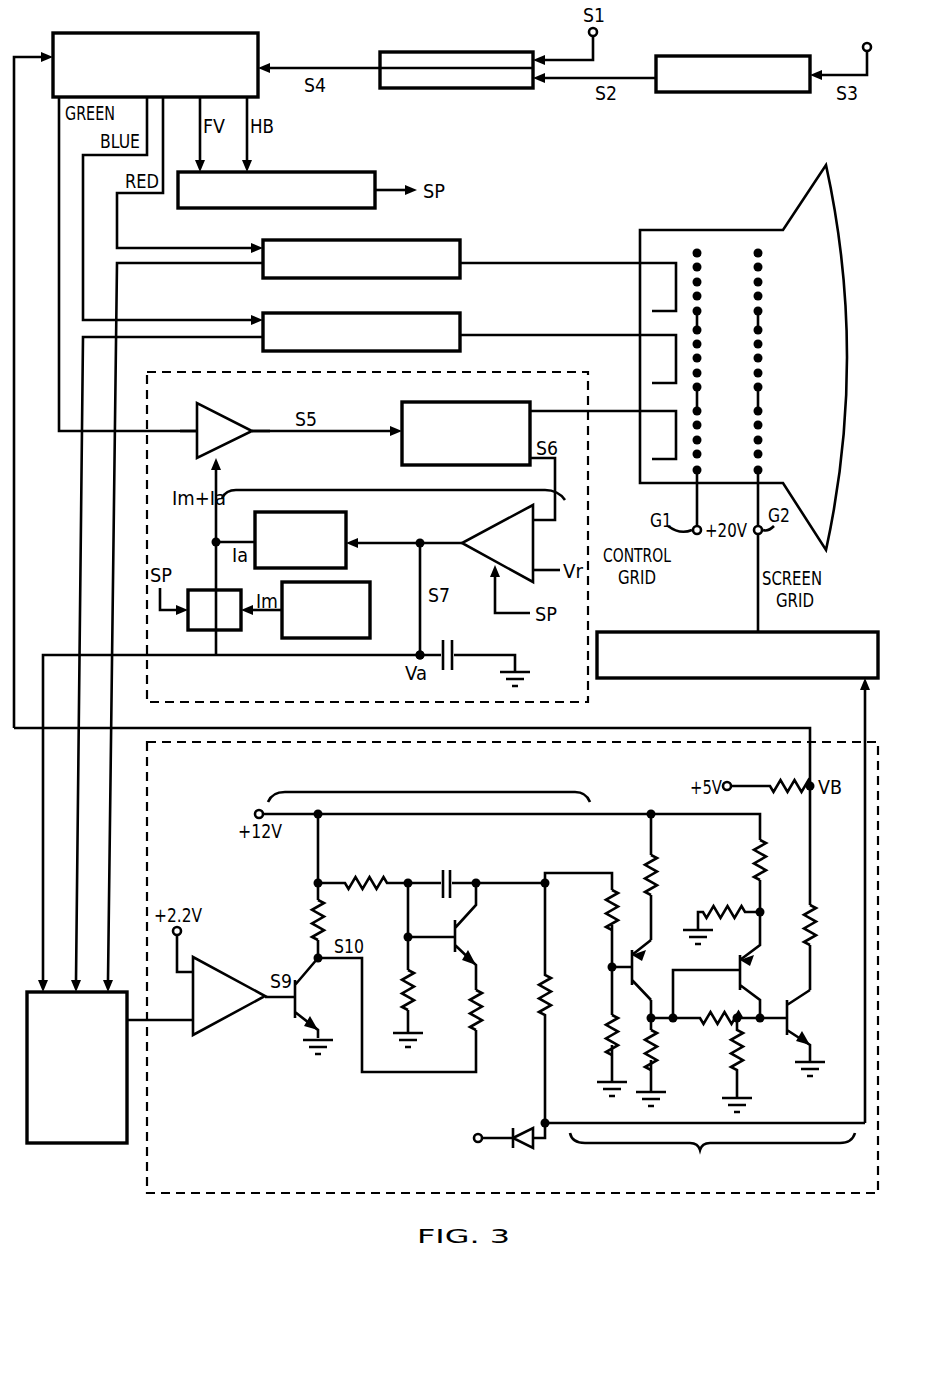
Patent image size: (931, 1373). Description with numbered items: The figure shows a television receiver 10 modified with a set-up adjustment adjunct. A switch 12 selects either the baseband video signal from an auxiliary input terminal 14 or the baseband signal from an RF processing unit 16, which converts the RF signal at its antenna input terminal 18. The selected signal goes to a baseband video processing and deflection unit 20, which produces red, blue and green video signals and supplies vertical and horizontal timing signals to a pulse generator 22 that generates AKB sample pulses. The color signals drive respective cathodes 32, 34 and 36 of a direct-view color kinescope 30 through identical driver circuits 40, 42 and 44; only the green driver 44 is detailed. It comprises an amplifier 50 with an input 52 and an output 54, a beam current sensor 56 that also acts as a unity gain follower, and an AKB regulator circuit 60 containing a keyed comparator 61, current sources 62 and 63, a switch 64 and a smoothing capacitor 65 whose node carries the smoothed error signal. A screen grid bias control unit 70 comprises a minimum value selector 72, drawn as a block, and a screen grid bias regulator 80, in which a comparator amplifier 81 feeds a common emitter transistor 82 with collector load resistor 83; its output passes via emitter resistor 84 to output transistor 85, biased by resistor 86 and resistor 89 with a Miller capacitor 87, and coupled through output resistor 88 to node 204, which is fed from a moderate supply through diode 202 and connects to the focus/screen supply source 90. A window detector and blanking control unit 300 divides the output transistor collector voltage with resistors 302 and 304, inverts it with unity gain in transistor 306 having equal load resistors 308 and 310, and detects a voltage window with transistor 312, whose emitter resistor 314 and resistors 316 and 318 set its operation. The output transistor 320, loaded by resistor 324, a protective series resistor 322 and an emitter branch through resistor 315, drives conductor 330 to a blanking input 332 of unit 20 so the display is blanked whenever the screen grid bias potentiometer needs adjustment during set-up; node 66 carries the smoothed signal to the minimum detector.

The television receiver 10 is at (329, 34).
The switch 12 is at (435, 52).
The auxiliary input terminal 14 is at (588, 29).
The RF processing unit 16 is at (737, 56).
The antenna input terminal 18 is at (864, 44).
The baseband video processing and deflection unit 20 is at (129, 33).
The pulse generator 22 is at (301, 172).
The direct-view color kinescope 30 is at (798, 210).
The cathode 32 is at (623, 263).
The cathode 34 is at (623, 335).
The cathode 36 is at (631, 411).
The red driver circuit 40 is at (262, 242).
The blue driver circuit 42 is at (262, 315).
The green driver circuit 44 is at (257, 374).
The amplifier 50 is at (228, 415).
The input 52 is at (190, 429).
The output 54 is at (251, 438).
The beam current sensor 56 is at (402, 405).
The automatic kinescope bias regulator circuit 60 is at (393, 481).
The keyed comparator 61 is at (513, 556).
The current source 62 is at (346, 521).
The current source 63 is at (370, 594).
The switch 64 is at (190, 630).
The capacitor 65 is at (450, 672).
The node Va 66 is at (418, 653).
The screen grid bias control unit 70 is at (863, 740).
The minimum value selector circuit 72 is at (85, 1102).
The screen grid bias regulator circuit 80 is at (429, 782).
The comparator amplifier 81 is at (217, 1022).
The transistor 82 is at (332, 1009).
The collector load resistor 83 is at (316, 938).
The emitter resistor 84 is at (473, 1016).
The high voltage amplifier transistor 85 is at (494, 944).
The resistor 86 is at (368, 890).
The capacitor 87 is at (447, 896).
The output resistor 88 is at (542, 981).
The resistor 89 is at (404, 982).
The focus/screen supply source 90 is at (737, 655).
The diode 202 is at (522, 1148).
The output 204 is at (542, 1121).
The window detector and blanking control unit 300 is at (712, 1155).
The resistor 302 is at (608, 909).
The resistor 304 is at (608, 1022).
The transistor 306 is at (689, 979).
The emitter load resistor 308 is at (657, 870).
The collector load resistor 310 is at (656, 1048).
The transistor 312 is at (732, 965).
The resistor 314 is at (764, 850).
The resistor 1K 315 is at (733, 912).
The resistor 316 is at (710, 1045).
The resistor 318 is at (742, 1046).
The output transistor 320 is at (826, 1030).
The resistor 330 ohm 322 is at (816, 917).
The load resistor 324 is at (778, 780).
The conductor 330 is at (672, 728).
The blanking input 332 is at (29, 56).